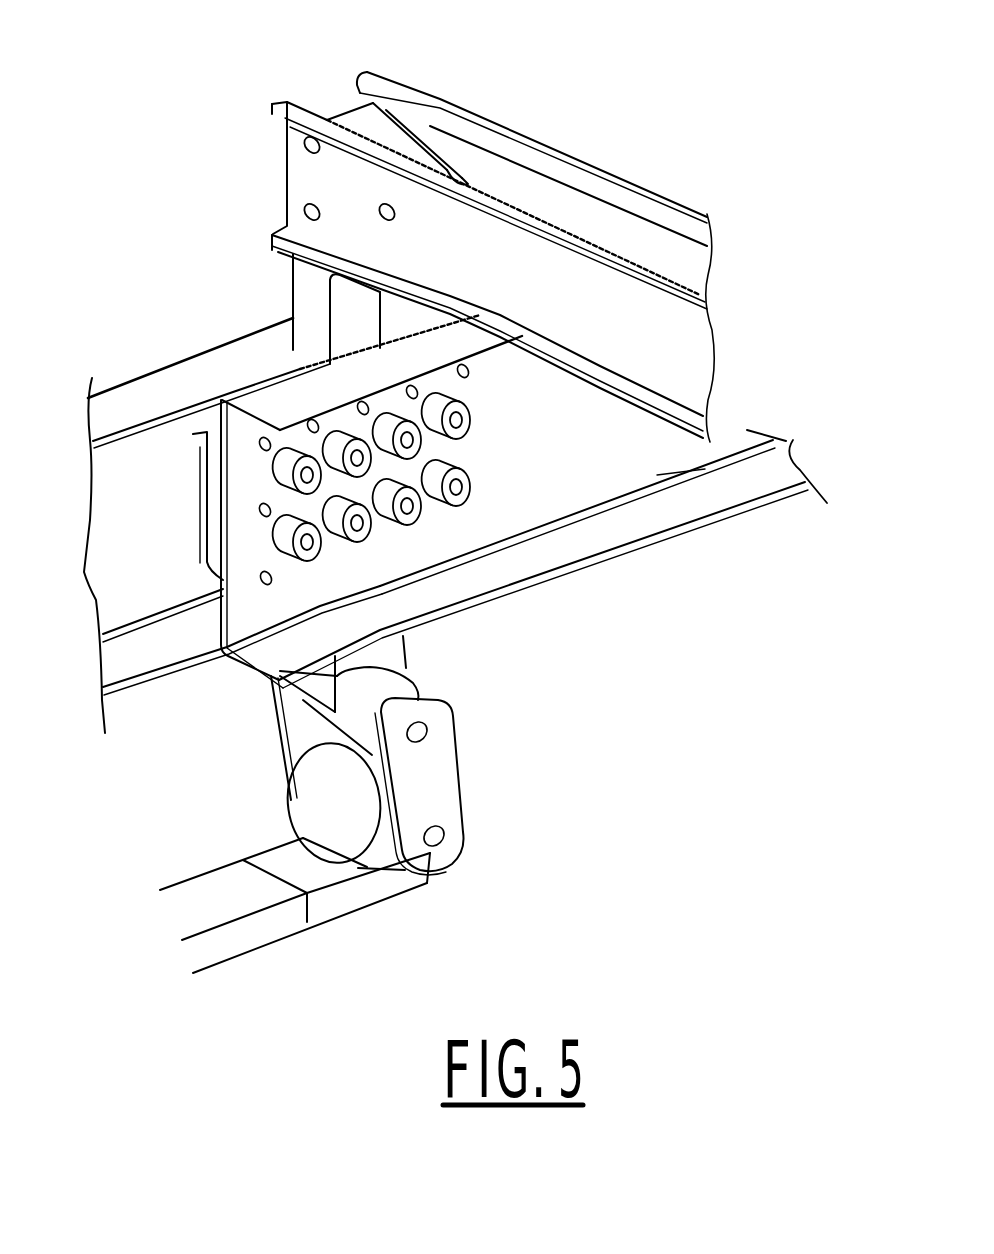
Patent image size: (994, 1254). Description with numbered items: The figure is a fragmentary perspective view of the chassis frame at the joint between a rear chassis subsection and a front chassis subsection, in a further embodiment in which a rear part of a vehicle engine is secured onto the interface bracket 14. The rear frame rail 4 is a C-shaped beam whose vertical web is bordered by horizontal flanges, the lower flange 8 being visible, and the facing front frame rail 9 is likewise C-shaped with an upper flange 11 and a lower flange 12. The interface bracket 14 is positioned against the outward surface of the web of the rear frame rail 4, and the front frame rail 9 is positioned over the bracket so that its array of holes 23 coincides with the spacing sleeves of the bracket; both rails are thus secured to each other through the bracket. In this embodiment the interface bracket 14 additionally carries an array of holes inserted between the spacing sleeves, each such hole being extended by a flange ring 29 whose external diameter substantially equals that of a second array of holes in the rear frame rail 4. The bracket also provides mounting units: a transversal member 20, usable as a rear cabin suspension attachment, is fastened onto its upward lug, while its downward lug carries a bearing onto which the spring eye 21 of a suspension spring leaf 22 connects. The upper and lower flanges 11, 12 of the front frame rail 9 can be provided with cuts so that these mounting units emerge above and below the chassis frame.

The rear frame rail 4 is at (793, 440).
The lower flange 8 is at (653, 507).
The front frame rail 9 is at (83, 574).
The upper flange 11 is at (148, 408).
The lower flange 12 is at (150, 647).
The interface bracket 14 is at (335, 297).
The transversal member 20 is at (630, 221).
The spring eye 21 is at (333, 800).
The suspension spring leaf 22 is at (237, 933).
The array of holes 23 is at (270, 583).
The flange ring 29 is at (470, 417).